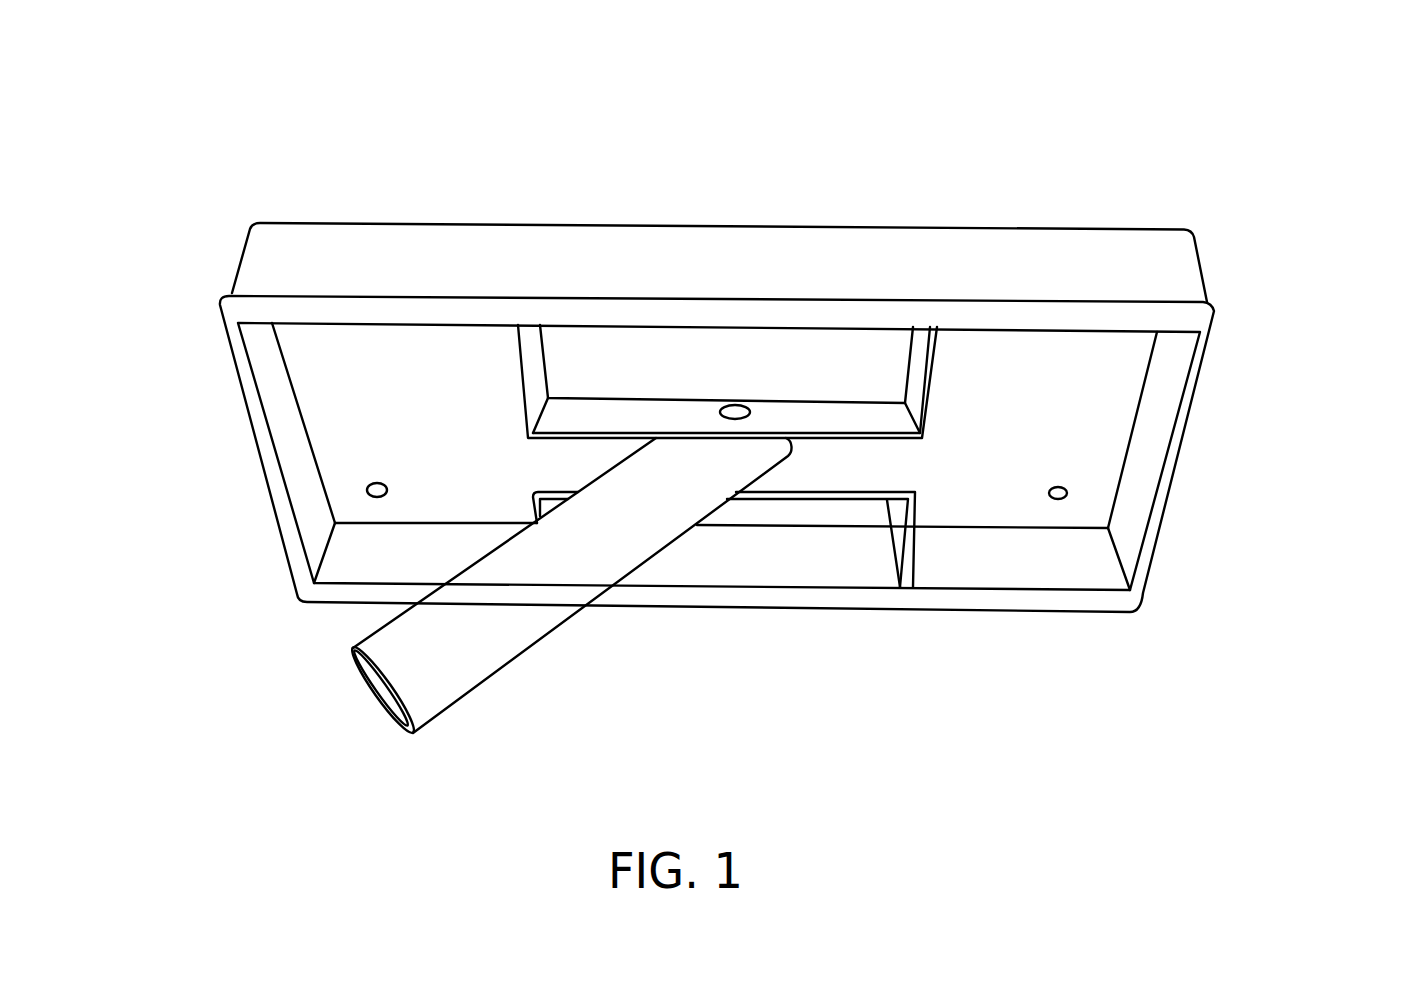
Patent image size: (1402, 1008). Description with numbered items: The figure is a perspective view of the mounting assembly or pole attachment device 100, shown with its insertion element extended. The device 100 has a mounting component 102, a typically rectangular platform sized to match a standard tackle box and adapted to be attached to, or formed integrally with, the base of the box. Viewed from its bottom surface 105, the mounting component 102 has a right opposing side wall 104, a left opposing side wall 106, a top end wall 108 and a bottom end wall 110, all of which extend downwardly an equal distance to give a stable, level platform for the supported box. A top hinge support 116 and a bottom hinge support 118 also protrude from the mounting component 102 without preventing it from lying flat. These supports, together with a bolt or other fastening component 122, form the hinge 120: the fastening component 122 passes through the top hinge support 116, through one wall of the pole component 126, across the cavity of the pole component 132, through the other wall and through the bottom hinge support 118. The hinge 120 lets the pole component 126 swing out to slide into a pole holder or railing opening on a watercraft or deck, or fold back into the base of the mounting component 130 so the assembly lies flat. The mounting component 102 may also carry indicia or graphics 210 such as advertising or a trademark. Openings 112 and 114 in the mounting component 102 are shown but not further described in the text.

The mounting assembly 100 is at (250, 146).
The mounting component 102 is at (1202, 253).
The right opposing side wall 104 is at (1168, 483).
The bottom surface 105 is at (411, 393).
The left opposing side wall 106 is at (278, 436).
The top opposing end wall 108 is at (335, 270).
The bottom opposing end wall 110 is at (341, 600).
The mounting hole 112 is at (1066, 497).
The lower corner edge 114 is at (1123, 602).
The top hinge support 116 is at (930, 388).
The bottom hinge support 118 is at (898, 540).
The hinge 120 is at (748, 404).
The fastening component 122 is at (450, 708).
The pole component 126 is at (510, 628).
The base of the mounting component 130 is at (467, 345).
The cavity of the pole component 132 is at (380, 700).
The indicia 210 is at (740, 247).